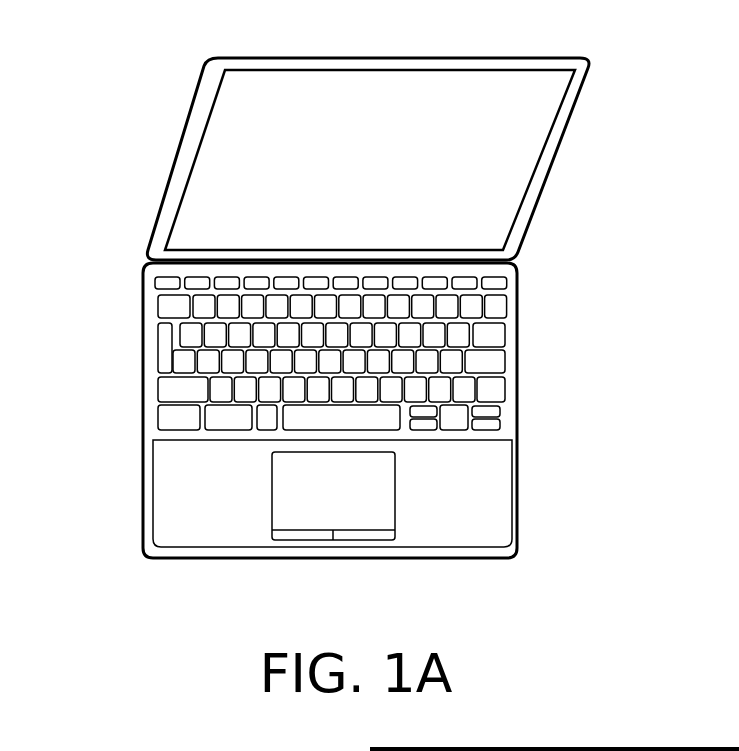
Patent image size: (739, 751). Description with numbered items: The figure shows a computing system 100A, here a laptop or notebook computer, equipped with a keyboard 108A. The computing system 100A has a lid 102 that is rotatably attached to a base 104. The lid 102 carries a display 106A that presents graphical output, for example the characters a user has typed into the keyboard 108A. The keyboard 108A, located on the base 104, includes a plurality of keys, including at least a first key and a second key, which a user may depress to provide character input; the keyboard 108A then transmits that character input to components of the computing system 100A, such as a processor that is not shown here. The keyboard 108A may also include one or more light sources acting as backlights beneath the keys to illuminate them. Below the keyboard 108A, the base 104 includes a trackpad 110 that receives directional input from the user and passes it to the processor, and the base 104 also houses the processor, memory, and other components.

The computing system 100A is at (143, 74).
The lid 102 is at (563, 147).
The base 104 is at (520, 463).
The display 106A is at (341, 183).
The keyboard 108A is at (170, 310).
The trackpad 110 is at (294, 522).